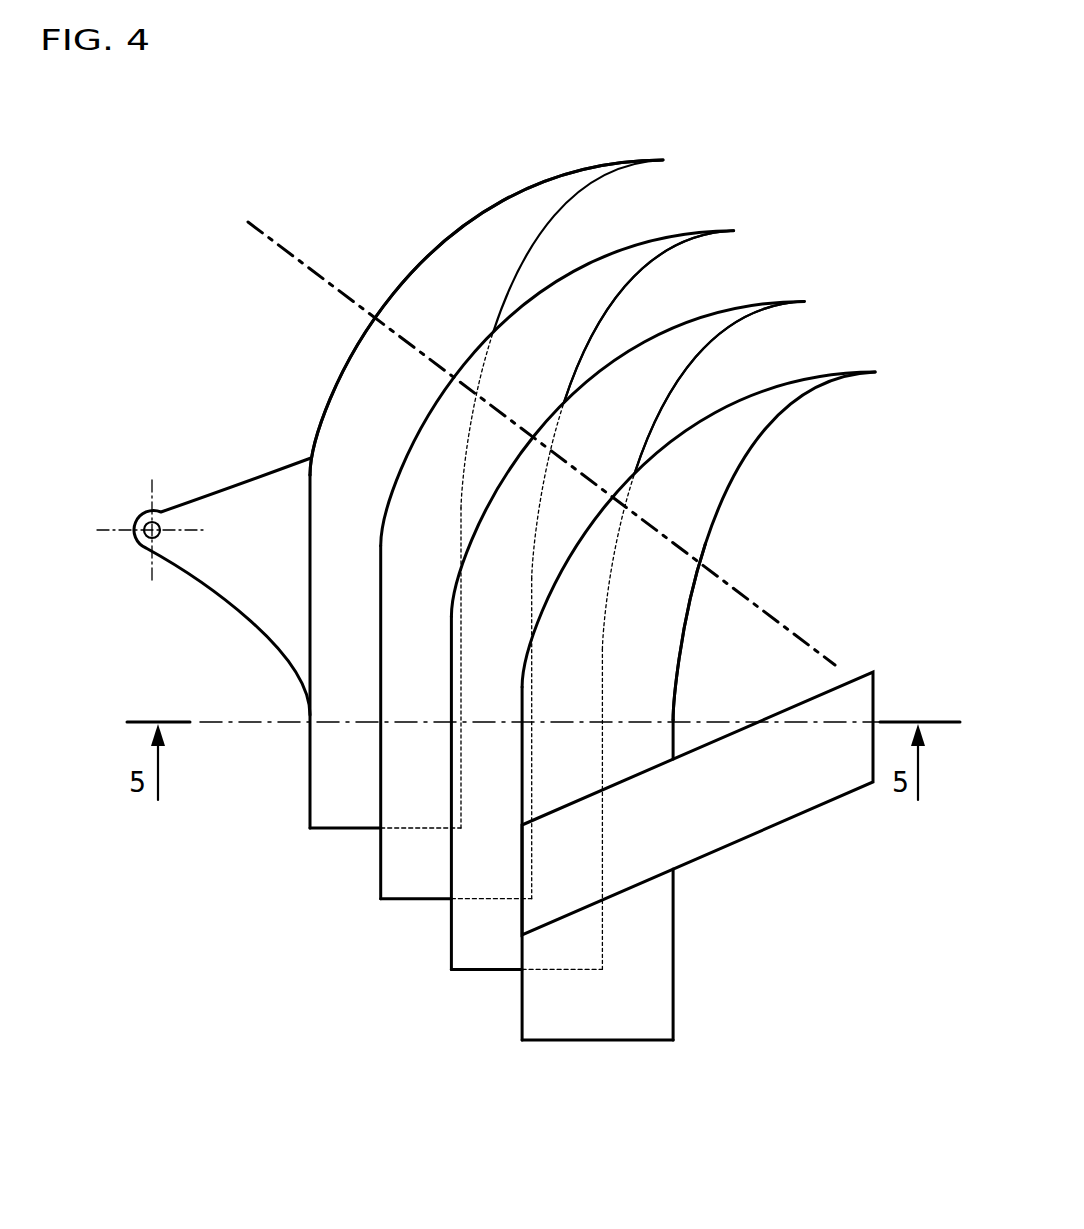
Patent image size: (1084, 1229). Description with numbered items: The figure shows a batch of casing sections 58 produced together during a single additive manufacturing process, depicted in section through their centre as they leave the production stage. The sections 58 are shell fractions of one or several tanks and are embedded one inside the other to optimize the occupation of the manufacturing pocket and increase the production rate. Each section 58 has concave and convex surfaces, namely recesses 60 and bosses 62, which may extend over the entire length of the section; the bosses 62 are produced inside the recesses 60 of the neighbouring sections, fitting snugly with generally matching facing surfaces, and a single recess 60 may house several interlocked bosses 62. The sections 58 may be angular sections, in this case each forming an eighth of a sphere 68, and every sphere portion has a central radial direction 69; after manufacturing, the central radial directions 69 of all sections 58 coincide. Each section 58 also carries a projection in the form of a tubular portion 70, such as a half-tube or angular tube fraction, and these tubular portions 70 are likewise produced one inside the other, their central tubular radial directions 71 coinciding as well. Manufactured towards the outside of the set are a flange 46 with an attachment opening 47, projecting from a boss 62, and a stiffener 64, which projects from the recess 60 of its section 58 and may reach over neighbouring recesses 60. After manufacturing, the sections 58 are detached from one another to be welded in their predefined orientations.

The flange 46 is at (275, 571).
The attachment opening 47 is at (154, 526).
The casing section 58 is at (366, 445).
The recess 60 is at (360, 569).
The boss 62 is at (465, 358).
The stiffener 64 is at (787, 783).
The eighth of a sphere 68 is at (732, 232).
The central radial direction 69 is at (248, 222).
The tubular portion 70 is at (405, 787).
The central tubular radial direction 71 is at (205, 722).